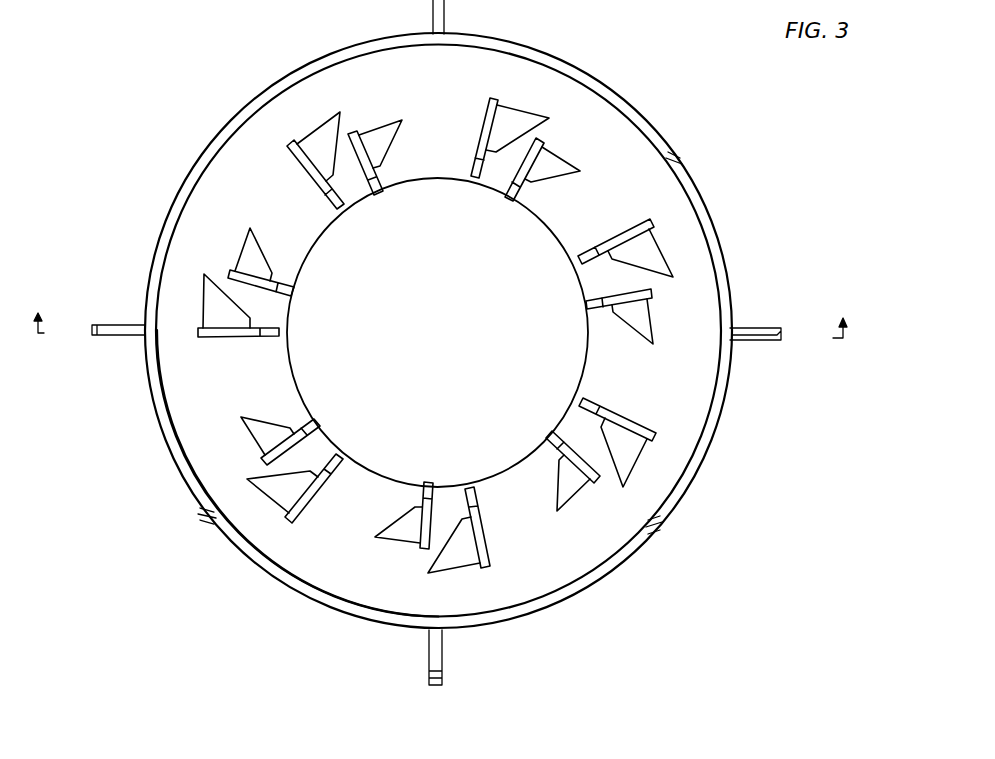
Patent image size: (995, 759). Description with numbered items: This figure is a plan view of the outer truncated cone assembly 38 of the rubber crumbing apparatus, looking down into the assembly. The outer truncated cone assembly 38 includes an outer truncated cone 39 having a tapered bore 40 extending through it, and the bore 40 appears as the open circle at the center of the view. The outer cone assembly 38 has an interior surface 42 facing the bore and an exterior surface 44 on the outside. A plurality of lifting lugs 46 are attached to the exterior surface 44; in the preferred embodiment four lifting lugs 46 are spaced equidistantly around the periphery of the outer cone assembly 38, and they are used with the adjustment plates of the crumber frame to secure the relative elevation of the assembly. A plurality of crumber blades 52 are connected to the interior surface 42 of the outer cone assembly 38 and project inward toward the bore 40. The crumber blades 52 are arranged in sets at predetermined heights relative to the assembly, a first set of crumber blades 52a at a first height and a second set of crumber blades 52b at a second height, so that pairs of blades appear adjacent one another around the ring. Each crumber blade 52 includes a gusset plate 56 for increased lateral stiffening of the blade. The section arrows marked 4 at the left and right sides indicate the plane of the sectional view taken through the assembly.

The outer truncated cone assembly 38 is at (231, 114).
The outer truncated cone 39 is at (212, 531).
The tapered bore 40 is at (388, 349).
The interior surface 42 is at (558, 567).
The exterior surface 44 is at (690, 488).
The lifting lugs 46 is at (444, 12).
The crumber blades 52 is at (382, 196).
The first set of crumber blades 52a is at (233, 340).
The second set of crumber blades 52b is at (583, 304).
The gusset plate 56 is at (256, 250).
The section line 4- 4 is at (440, 310).